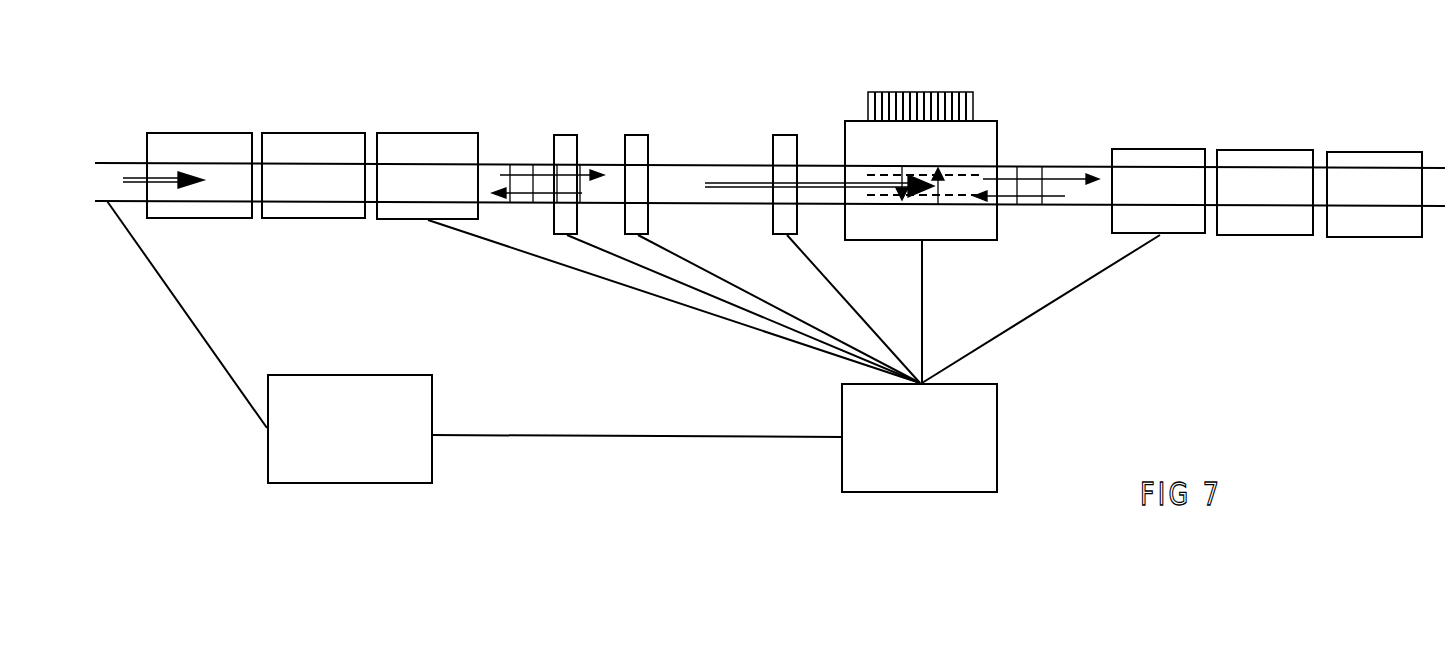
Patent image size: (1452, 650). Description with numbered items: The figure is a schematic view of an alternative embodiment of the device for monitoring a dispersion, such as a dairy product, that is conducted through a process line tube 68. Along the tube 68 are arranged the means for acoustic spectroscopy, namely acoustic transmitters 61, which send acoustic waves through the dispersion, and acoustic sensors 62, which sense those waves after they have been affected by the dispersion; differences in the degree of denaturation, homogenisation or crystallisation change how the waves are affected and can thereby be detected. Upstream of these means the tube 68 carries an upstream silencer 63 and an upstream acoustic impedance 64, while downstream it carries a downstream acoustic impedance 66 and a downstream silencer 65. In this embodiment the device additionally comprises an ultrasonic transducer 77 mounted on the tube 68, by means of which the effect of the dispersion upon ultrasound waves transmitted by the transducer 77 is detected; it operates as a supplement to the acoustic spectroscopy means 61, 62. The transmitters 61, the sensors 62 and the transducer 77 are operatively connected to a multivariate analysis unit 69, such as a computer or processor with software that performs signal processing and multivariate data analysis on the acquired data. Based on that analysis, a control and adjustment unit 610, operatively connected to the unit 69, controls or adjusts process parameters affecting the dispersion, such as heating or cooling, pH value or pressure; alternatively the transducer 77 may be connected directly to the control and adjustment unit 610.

The acoustic transmitter 61 is at (432, 140).
The acoustic sensor 62 is at (637, 132).
The upstream silencer 63 is at (217, 148).
The upstream acoustic impedance 64 is at (305, 147).
The downstream silencer 65 is at (1380, 157).
The downstream acoustic impedance 66 is at (1282, 160).
The process line tube 68 is at (700, 163).
The multivariate analysis unit 69 is at (946, 465).
The ultrasonic transducer 77 is at (923, 133).
The control and adjustment unit 610 is at (355, 463).